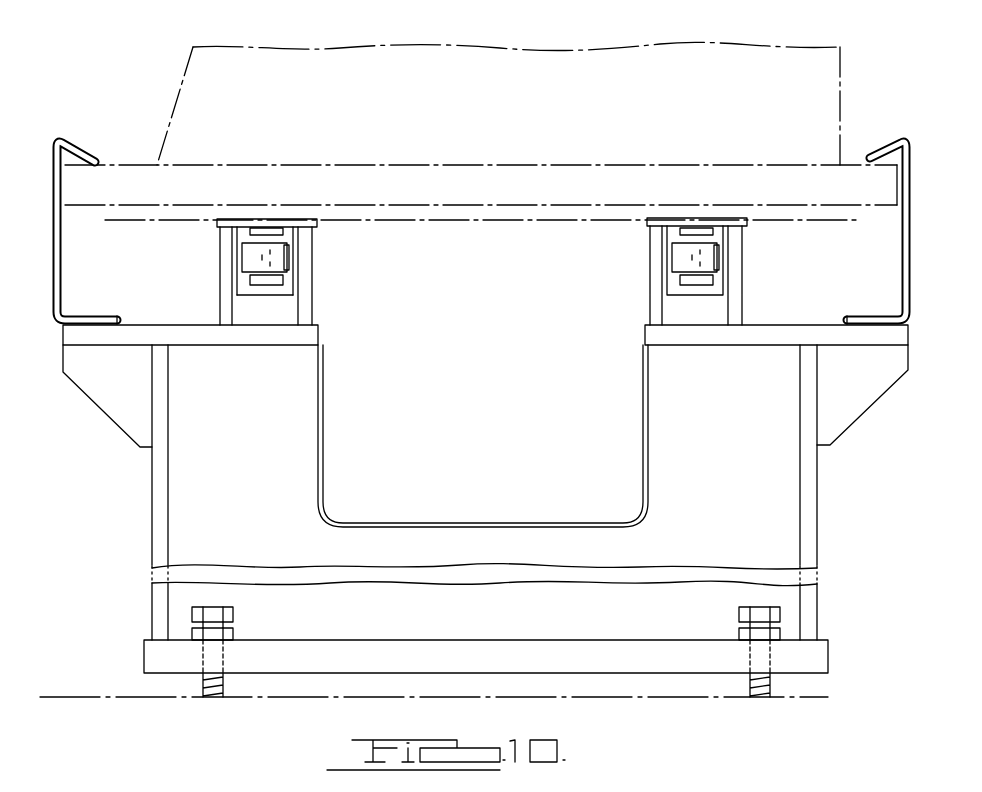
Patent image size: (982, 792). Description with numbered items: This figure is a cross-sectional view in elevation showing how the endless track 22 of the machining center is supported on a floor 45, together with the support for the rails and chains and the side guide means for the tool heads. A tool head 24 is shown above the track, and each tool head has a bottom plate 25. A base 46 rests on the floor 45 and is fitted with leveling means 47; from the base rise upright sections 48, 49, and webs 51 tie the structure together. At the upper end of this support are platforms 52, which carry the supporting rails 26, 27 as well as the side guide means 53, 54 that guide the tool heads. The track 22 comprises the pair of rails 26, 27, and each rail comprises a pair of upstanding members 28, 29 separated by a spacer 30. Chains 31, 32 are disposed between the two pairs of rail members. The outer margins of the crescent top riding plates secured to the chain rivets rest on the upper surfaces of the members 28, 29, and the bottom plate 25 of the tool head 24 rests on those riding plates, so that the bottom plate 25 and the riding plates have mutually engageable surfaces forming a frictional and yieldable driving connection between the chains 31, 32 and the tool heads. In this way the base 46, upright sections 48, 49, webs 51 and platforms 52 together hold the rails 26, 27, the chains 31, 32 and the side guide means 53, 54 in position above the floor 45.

The endless track 22 is at (895, 391).
The table top 24 is at (176, 84).
The bottom plate 25 is at (112, 173).
The rail 26 is at (269, 308).
The rail 27 is at (723, 315).
The upstanding member 28 is at (229, 278).
The upstanding member 29 is at (302, 272).
The spacer 30 is at (277, 310).
The chain 31 is at (308, 250).
The chain 32 is at (736, 252).
The floor 45 is at (68, 695).
The base 46 is at (545, 640).
The leveling means 47 is at (233, 622).
The upright section 48 is at (162, 465).
The upright section 49 is at (810, 502).
The web 51 is at (443, 538).
The platform 52 is at (797, 325).
The side guide means 53 is at (50, 153).
The side guide means 54 is at (910, 157).